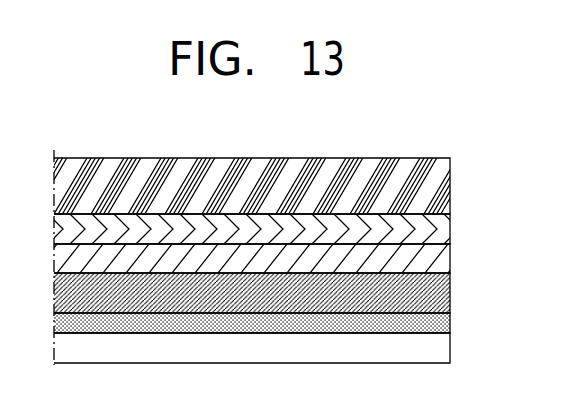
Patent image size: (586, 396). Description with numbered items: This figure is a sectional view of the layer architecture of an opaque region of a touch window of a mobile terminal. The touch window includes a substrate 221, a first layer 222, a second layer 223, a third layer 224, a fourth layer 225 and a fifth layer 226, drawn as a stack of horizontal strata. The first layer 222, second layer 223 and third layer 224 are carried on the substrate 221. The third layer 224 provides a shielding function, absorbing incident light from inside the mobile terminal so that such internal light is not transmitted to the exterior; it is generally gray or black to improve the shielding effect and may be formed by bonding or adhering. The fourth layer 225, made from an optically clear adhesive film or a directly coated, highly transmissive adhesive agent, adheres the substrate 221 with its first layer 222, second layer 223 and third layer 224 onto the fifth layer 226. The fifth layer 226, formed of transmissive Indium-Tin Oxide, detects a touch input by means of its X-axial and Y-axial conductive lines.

The substrate 221 is at (443, 189).
The first layer 222 is at (443, 231).
The second layer 223 is at (443, 259).
The third layer 224 is at (443, 296).
The fourth layer 225 is at (443, 324).
The fifth layer 226 is at (443, 350).